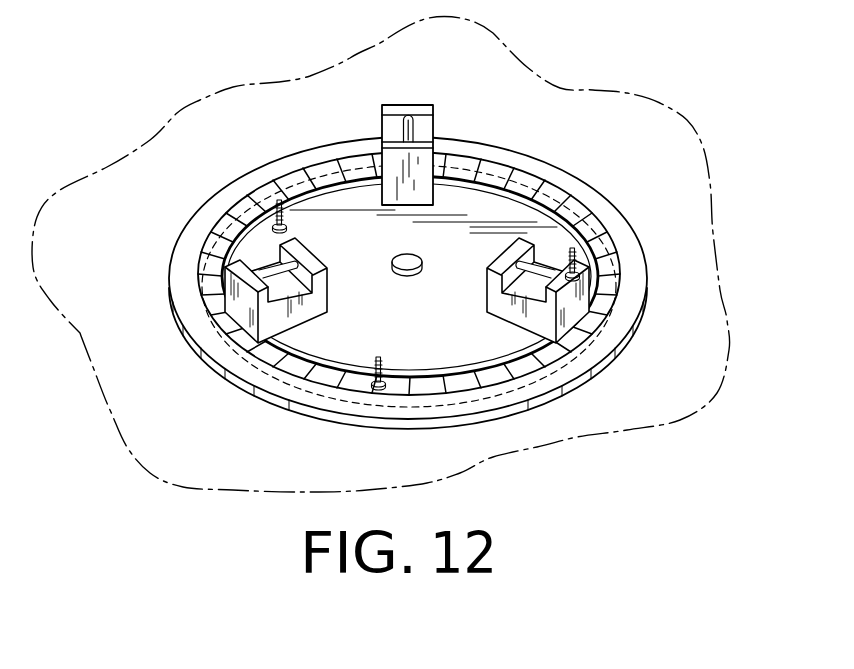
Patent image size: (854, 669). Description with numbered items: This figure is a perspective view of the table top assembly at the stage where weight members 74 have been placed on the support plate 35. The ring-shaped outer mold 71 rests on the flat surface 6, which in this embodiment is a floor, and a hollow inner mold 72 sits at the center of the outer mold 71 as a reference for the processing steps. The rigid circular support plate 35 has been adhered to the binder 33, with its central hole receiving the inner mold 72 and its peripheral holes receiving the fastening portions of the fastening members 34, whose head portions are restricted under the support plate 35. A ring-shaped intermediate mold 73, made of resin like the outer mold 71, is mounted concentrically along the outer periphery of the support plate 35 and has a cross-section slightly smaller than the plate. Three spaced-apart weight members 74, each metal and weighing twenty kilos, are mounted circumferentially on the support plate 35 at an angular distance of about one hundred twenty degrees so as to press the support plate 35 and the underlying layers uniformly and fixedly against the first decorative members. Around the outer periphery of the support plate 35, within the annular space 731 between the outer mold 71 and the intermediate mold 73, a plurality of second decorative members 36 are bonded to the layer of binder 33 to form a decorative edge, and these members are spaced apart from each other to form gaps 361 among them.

The flat surface 6 is at (686, 116).
The outer mold 71 is at (604, 203).
The inner mold 72 is at (419, 259).
The intermediate mold 73 is at (260, 210).
The annular space 731 is at (203, 248).
The weight members 74 is at (390, 160).
The binder 33 is at (233, 354).
The fastening members 34 is at (364, 371).
The support plate 35 is at (325, 212).
The second decorative members 36 is at (282, 365).
The gaps 361 is at (203, 337).